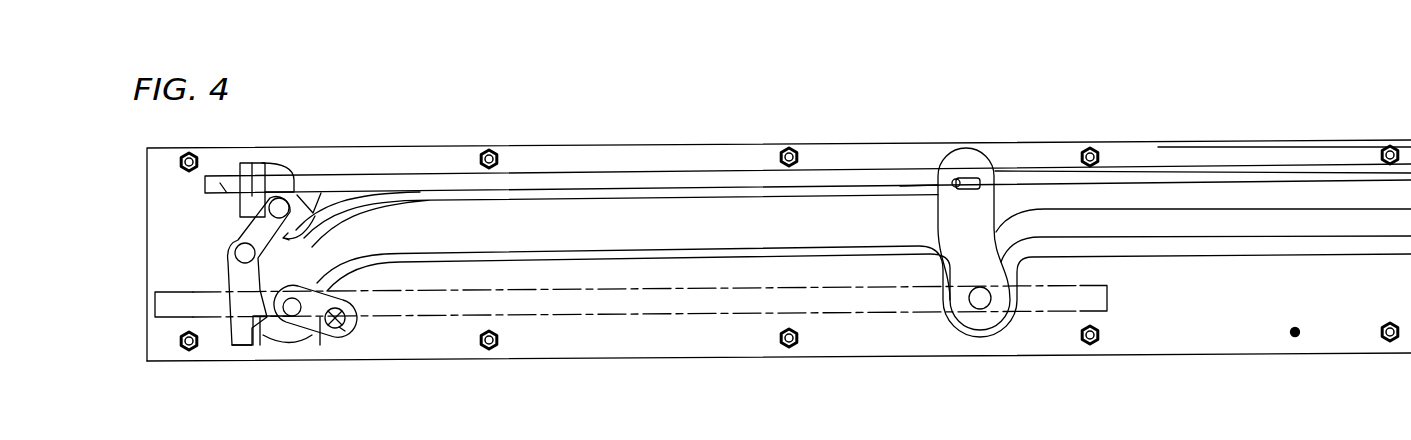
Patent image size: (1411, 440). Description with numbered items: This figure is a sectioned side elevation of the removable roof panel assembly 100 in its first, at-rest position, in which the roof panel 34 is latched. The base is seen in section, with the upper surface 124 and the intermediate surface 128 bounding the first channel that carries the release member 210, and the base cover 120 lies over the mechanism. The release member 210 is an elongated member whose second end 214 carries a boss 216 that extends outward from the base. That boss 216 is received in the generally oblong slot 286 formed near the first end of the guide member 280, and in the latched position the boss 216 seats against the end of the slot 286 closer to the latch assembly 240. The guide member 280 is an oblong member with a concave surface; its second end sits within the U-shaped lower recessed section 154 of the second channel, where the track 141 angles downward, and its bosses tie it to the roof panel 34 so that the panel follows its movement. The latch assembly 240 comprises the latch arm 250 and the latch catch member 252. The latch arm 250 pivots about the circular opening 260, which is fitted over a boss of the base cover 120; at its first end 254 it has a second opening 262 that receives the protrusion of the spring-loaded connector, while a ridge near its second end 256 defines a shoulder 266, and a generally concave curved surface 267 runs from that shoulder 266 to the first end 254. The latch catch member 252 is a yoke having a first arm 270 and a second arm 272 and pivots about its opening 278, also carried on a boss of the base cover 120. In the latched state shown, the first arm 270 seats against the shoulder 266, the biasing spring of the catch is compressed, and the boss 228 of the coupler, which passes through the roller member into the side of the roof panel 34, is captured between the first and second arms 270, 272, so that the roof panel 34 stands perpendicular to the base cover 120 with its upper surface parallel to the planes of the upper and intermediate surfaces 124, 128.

The removable roof panel assembly 100 is at (763, 66).
The release member 210 is at (655, 178).
The second end 214 is at (920, 181).
The boss 216 is at (956, 180).
The slot 286 is at (981, 177).
The guide member 280 is at (926, 218).
The lower recessed section 154 is at (972, 333).
The roof panel 34 is at (1063, 296).
The upper surface 124 is at (1158, 141).
The track 141 is at (1235, 222).
The intermediate surface 128 is at (1158, 354).
The base cover 120 is at (1295, 337).
The latch arm 250 is at (255, 217).
The second opening 262 is at (268, 165).
The first end 254 is at (287, 198).
The curved surface 267 is at (330, 207).
The opening 260 is at (235, 251).
The latch assembly 240 is at (216, 283).
The second arm 272 is at (318, 283).
The opening 278 is at (347, 314).
The boss 228 is at (339, 327).
The latch catch member 252 is at (320, 338).
The first arm 270 is at (285, 334).
The shoulder 266 is at (262, 333).
The second end 256 is at (238, 348).